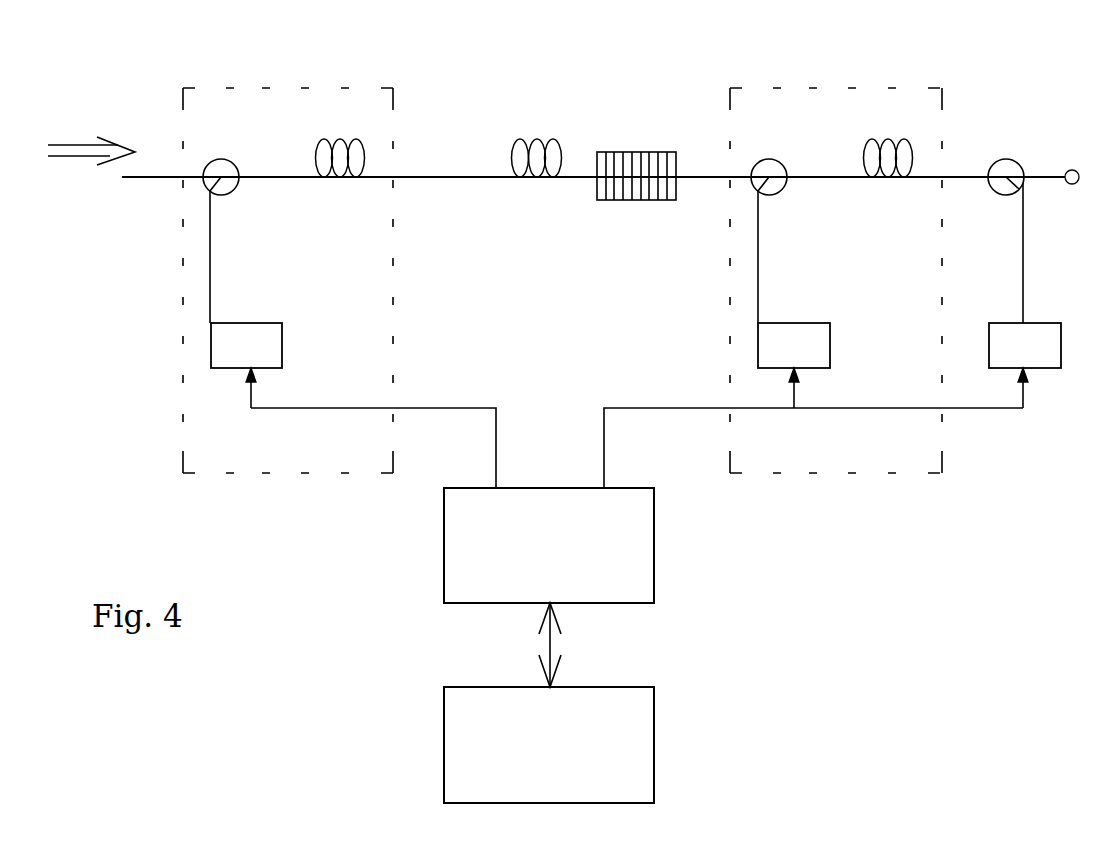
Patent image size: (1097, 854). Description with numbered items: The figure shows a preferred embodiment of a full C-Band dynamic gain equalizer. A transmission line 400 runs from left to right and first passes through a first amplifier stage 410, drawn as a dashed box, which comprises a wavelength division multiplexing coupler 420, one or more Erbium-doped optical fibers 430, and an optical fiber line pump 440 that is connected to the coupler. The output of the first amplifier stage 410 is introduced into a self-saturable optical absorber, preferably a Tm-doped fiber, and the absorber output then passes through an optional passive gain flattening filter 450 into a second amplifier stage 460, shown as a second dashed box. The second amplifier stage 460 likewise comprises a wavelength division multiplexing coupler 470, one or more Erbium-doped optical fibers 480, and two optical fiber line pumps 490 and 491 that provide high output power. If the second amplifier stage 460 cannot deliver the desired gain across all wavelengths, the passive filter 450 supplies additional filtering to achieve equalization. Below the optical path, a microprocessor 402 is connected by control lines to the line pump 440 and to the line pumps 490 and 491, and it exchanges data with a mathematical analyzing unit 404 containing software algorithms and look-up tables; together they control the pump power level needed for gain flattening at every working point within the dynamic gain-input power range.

The transmission line 400 is at (163, 178).
The first amplifier stage 410 is at (383, 85).
The wavelength division multiplexing coupler 420 is at (224, 160).
The Erbium-doped optical fibers 430 is at (340, 138).
The optical fiber line pump 440 is at (353, 405).
The passive gain flattening filter 450 is at (631, 152).
The second amplifier stage 460 is at (925, 83).
The wavelength division multiplexing coupler 470 is at (768, 158).
The Erbium-doped optical fibers 480 is at (885, 140).
The optical fiber line pump 490 is at (813, 405).
The optical fiber line pump 491 is at (1024, 283).
The microprocessor 402 is at (649, 583).
The mathematical analyzing unit 404 is at (620, 805).